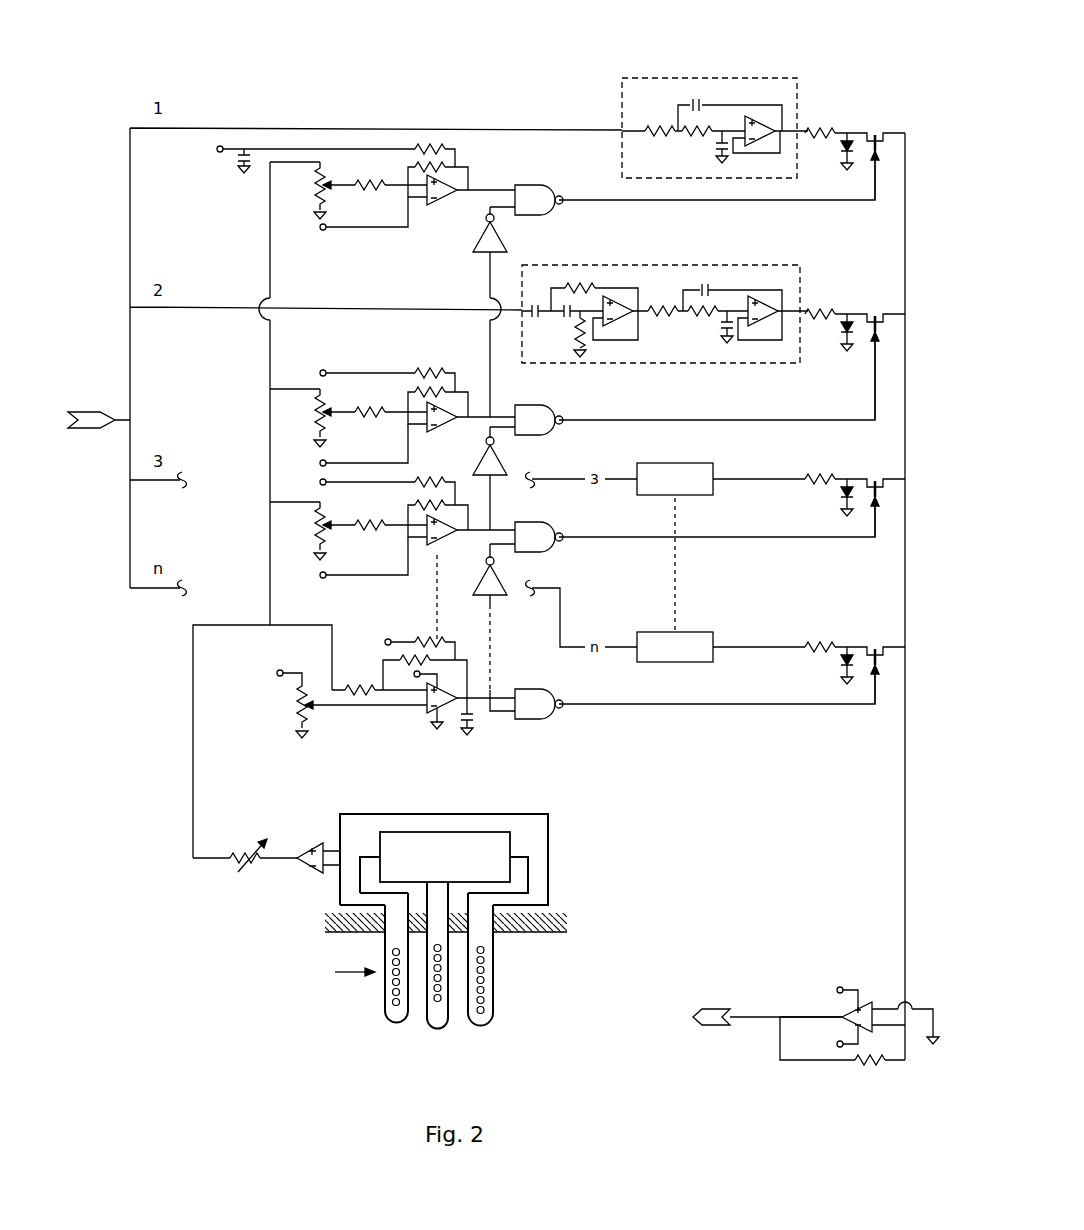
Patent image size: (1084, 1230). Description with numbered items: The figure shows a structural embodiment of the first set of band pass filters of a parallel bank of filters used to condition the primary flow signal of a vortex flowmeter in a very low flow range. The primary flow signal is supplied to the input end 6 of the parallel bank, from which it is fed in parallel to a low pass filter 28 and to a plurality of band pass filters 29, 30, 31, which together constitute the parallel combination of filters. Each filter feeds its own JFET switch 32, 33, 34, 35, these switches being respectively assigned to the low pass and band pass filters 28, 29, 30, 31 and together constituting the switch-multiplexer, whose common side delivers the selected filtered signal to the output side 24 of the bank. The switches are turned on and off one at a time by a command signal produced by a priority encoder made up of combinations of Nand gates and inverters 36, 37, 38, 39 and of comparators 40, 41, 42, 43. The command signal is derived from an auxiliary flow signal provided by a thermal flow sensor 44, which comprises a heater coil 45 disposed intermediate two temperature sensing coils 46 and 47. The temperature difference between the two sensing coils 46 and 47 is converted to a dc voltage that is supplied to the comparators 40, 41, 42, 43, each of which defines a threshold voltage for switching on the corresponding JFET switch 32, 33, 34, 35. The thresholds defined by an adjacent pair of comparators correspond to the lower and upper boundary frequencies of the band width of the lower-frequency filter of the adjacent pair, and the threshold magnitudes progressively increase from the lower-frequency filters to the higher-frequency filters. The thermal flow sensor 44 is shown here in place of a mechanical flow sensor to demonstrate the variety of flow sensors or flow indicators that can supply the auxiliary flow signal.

The input end 6 is at (116, 428).
The output side 24 is at (755, 1022).
The low pass filter 28 is at (622, 96).
The band pass filter 29 is at (578, 264).
The band pass filter 30 is at (650, 462).
The band pass filter 31 is at (650, 631).
The JFET switch 32 is at (828, 106).
The JFET switch 33 is at (830, 300).
The JFET switch 34 is at (830, 476).
The JFET switch 35 is at (830, 636).
The Nand gate and inverter combination 36 is at (548, 186).
The Nand gate and inverter combination 37 is at (550, 408).
The Nand gate and inverter combination 38 is at (540, 553).
The Nand gate and inverter combination 39 is at (540, 722).
The comparator 40 is at (455, 208).
The comparator 41 is at (452, 398).
The comparator 42 is at (425, 550).
The comparator 43 is at (418, 716).
The thermal flow sensor 44 is at (512, 966).
The heater coil 45 is at (440, 1032).
The temperature sensing coil 46 is at (380, 1024).
The temperature sensing coil 47 is at (500, 1024).